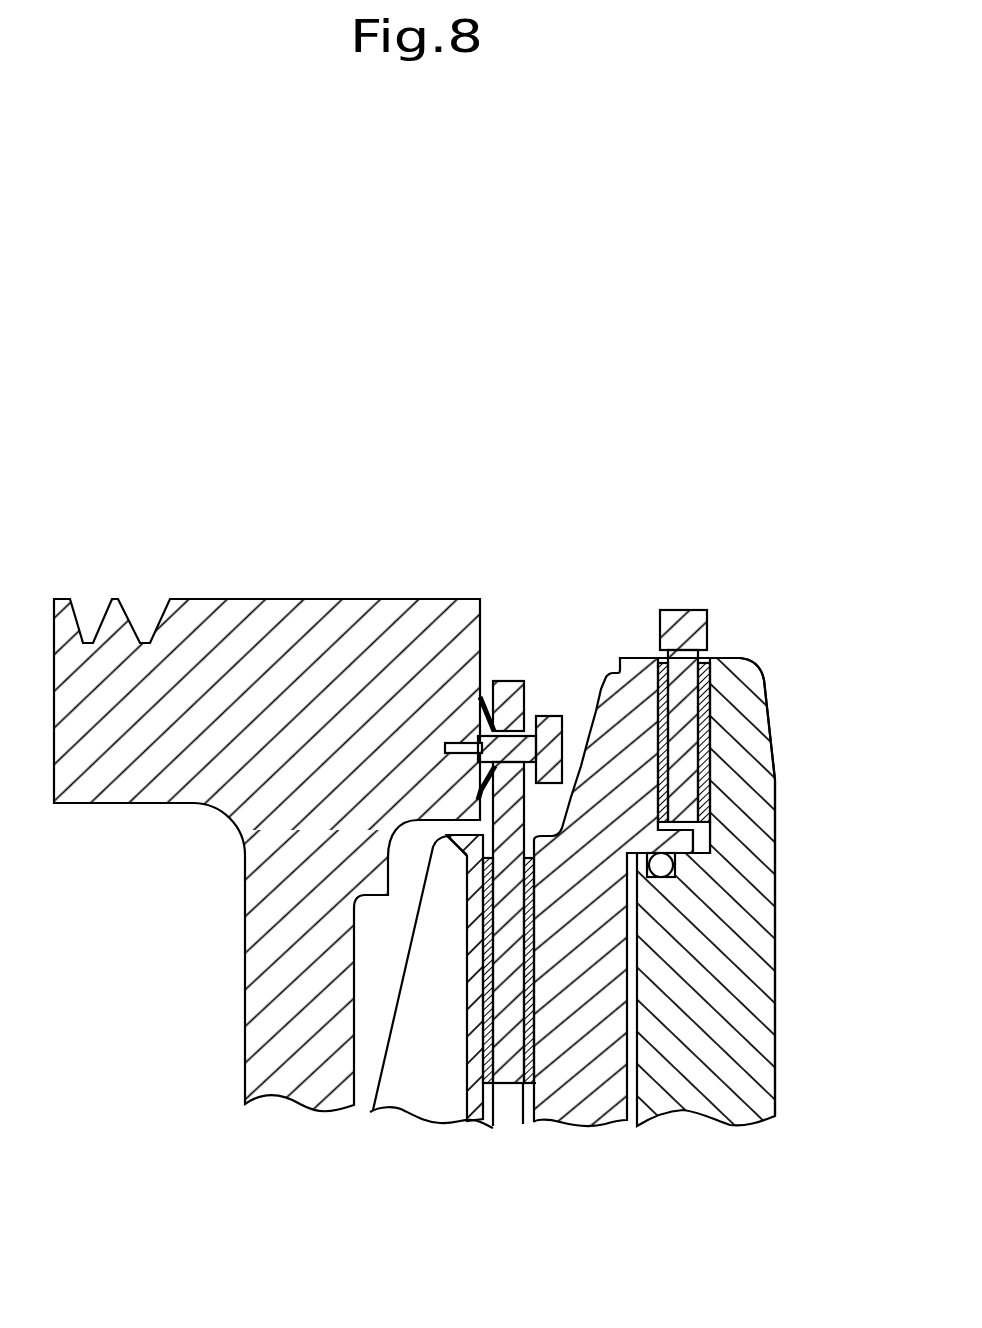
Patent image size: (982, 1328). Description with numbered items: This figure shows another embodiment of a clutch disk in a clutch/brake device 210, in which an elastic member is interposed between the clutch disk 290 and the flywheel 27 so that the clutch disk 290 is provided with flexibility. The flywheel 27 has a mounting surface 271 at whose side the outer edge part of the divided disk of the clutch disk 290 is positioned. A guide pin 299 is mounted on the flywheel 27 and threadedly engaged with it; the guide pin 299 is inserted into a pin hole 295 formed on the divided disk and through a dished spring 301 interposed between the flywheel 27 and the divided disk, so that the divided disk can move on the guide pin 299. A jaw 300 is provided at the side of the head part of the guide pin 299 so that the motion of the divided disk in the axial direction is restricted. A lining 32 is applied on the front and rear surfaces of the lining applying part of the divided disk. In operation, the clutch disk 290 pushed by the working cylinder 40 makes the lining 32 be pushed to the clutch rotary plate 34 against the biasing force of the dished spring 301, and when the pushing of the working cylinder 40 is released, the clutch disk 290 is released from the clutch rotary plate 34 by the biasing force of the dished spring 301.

The flywheel 27 is at (242, 640).
The mounting surface 271 is at (483, 697).
The pin hole 295 is at (446, 745).
The dished spring 301 is at (529, 666).
The clutch disk 290 is at (556, 699).
The lining 32 is at (531, 1020).
The clutch rotary plate 34 is at (442, 1055).
The working cylinder 40 is at (603, 963).
The jaw 300 is at (601, 688).
The guide pin 299 is at (570, 800).
The clutch/brake device 210 is at (640, 360).